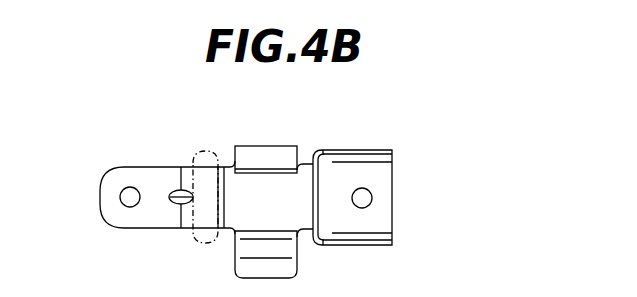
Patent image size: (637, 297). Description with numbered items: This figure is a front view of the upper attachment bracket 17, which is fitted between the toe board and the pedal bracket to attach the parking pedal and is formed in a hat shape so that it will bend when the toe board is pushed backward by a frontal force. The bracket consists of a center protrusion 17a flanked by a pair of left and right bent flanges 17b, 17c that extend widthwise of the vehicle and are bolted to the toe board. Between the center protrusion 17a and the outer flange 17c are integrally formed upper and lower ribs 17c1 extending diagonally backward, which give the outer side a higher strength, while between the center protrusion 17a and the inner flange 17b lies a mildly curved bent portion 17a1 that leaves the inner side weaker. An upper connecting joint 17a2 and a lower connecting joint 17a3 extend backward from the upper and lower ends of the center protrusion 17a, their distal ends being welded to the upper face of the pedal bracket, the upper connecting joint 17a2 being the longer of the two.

The upper attachment bracket 17 is at (133, 244).
The center protrusion 17a is at (250, 205).
The bent portion 17a1 is at (207, 150).
The upper connecting joint 17a2 is at (273, 152).
The lower connecting joint 17a3 is at (290, 268).
The bent flange 17b is at (152, 173).
The bent flange 17c is at (383, 200).
The rib 17c1 is at (370, 147).